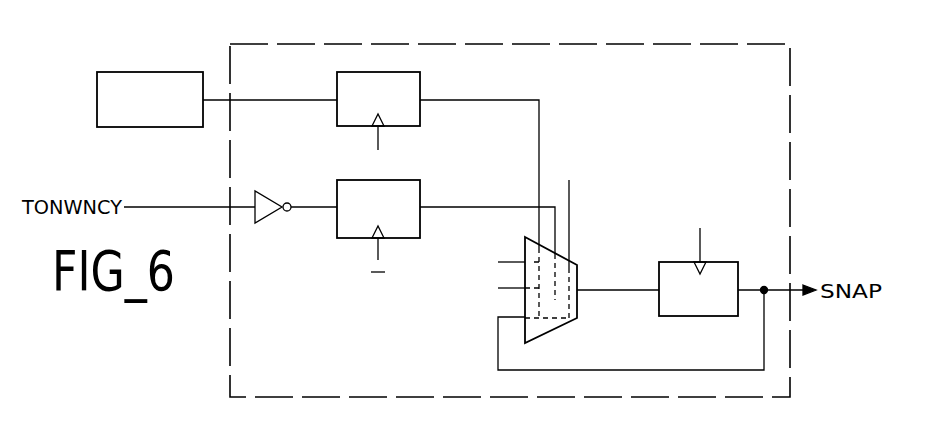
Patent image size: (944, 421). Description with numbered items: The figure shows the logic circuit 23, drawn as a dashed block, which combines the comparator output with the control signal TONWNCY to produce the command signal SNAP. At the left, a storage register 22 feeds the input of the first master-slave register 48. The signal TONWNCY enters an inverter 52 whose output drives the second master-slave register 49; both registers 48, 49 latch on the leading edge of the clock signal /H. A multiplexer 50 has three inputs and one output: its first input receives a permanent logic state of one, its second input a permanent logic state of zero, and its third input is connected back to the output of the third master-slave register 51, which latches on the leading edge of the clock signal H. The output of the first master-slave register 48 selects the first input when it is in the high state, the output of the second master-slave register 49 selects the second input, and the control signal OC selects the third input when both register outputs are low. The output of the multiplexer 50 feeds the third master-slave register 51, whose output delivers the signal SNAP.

The storage register 22 is at (132, 72).
The logic circuit 23 is at (700, 44).
The first master-slave register 48 is at (421, 77).
The second master-slave register 49 is at (421, 187).
The multiplexer 50 is at (580, 268).
The third master-slave register 51 is at (723, 262).
The inverter 52 is at (270, 223).